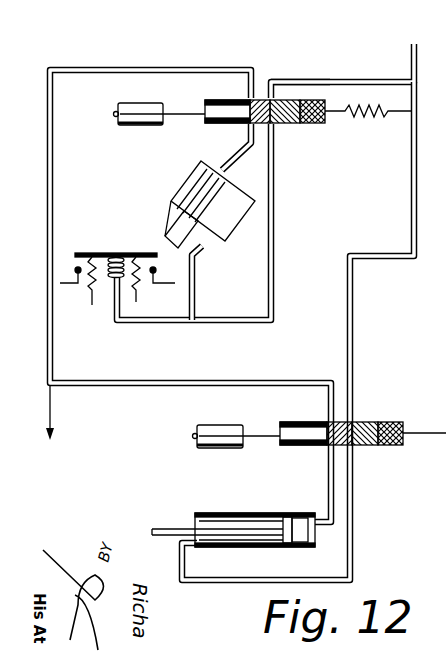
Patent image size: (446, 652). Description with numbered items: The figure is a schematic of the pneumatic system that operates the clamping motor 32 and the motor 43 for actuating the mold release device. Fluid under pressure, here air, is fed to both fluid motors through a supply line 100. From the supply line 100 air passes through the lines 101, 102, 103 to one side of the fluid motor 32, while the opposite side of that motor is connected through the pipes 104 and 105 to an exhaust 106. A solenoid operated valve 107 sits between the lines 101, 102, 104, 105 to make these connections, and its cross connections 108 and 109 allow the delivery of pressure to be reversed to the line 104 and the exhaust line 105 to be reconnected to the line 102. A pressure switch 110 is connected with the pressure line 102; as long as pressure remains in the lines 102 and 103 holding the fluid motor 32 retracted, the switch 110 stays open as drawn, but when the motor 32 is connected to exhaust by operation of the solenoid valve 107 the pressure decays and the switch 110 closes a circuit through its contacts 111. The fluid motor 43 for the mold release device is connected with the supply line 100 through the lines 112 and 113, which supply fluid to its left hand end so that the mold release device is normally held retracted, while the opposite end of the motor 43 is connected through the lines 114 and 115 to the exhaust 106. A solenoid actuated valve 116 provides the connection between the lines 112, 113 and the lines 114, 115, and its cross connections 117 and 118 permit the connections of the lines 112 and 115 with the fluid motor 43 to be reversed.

The supply line 100 is at (413, 40).
The line 101 is at (312, 82).
The line 102 is at (274, 235).
The line 103 is at (196, 287).
The pipe 104 is at (246, 141).
The pipe 105 is at (232, 72).
The exhaust 106 is at (58, 417).
The solenoid operated valve 107 is at (272, 102).
The cross connection 108 is at (300, 122).
The cross connection 109 is at (300, 103).
The pressure switch 110 is at (115, 243).
The contacts 111 is at (76, 270).
The line 112 is at (354, 392).
The line 113 is at (357, 540).
The line 114 is at (329, 470).
The line 115 is at (329, 398).
The solenoid actuated valve 116 is at (341, 415).
The cross connection 117 is at (389, 446).
The cross connection 118 is at (382, 421).
The clamping motor 32 is at (196, 171).
The motor 43 is at (256, 513).